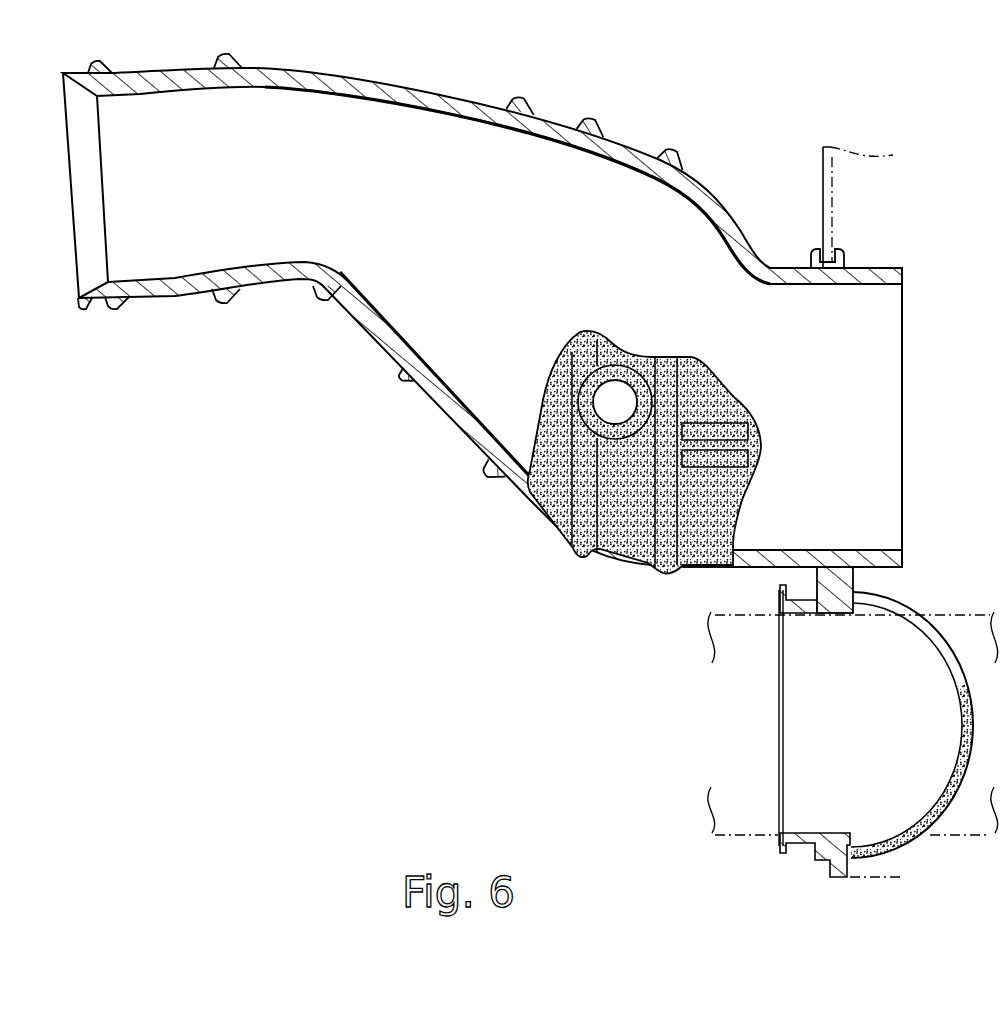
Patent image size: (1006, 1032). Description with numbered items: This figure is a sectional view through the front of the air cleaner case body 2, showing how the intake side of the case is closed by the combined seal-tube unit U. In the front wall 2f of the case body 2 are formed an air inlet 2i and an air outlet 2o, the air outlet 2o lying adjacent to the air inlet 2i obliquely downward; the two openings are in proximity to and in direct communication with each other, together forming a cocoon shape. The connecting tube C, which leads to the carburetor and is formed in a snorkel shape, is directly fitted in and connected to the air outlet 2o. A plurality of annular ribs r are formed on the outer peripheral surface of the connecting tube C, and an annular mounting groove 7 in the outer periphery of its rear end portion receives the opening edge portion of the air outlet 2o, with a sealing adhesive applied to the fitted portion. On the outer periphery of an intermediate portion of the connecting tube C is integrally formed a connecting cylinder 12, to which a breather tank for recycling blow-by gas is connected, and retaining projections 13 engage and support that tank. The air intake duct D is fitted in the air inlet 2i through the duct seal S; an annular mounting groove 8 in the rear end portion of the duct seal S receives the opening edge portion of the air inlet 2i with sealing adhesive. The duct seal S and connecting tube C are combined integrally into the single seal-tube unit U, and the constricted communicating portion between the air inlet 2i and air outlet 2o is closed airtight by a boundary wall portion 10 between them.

The case body 2 is at (818, 174).
The air outlet 2o is at (827, 287).
The front wall 2f is at (824, 214).
The air inlet 2i is at (834, 840).
The annular mounting groove 7 is at (828, 262).
The annular mounting groove 8 is at (852, 858).
The boundary wall portion 10 is at (855, 591).
The connecting cylinder 12 is at (621, 334).
The retaining projections 13 is at (757, 424).
The annular ribs r is at (588, 130).
The connecting tube C is at (638, 568).
The seal-tube unit U is at (647, 718).
The duct seal S is at (774, 704).
The air intake duct D is at (713, 835).